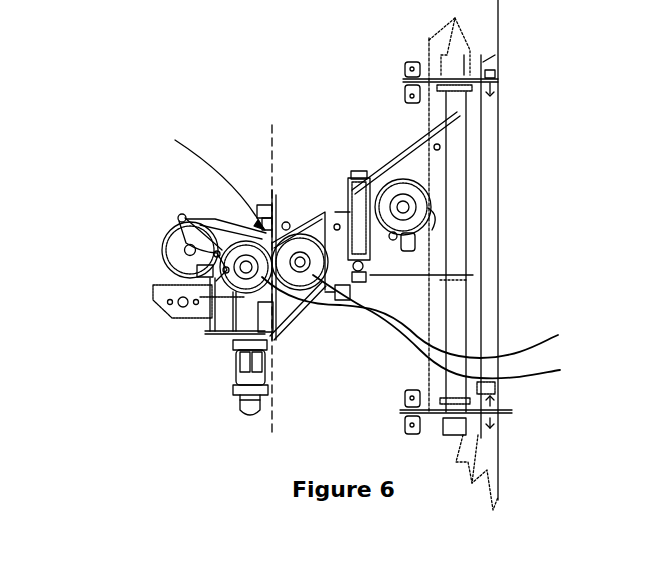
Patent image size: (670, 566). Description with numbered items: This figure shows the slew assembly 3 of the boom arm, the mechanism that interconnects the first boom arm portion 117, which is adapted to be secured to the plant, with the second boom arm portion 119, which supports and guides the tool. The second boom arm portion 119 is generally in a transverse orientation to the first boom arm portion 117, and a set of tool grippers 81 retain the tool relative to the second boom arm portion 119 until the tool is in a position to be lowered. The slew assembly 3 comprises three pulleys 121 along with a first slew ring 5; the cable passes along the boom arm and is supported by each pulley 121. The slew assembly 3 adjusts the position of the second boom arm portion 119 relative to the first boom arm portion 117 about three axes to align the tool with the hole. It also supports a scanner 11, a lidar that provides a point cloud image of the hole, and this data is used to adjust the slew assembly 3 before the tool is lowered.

The slew assembly 3 is at (212, 220).
The first slew ring 5 is at (250, 135).
The scanner 11 is at (243, 406).
The tool grippers 81 is at (497, 75).
The first boom arm portion 117 is at (163, 304).
The second boom arm portion 119 is at (460, 170).
The pulleys 121 is at (171, 252).